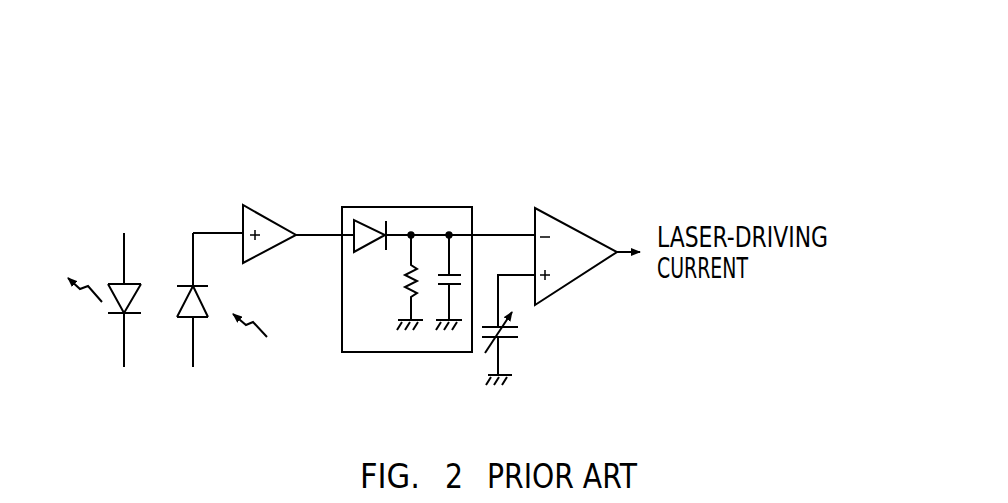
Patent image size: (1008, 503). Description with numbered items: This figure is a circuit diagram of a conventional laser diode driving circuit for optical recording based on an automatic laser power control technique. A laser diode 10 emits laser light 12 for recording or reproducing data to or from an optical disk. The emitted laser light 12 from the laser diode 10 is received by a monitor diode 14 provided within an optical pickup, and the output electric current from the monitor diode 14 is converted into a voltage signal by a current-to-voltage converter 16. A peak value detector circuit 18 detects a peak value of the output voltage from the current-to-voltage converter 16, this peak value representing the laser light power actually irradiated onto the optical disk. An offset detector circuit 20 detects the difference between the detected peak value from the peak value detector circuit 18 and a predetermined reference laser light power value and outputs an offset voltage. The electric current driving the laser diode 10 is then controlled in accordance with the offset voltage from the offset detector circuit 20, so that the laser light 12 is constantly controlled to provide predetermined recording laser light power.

The laser diode 10 is at (112, 317).
The laser light 12 is at (83, 293).
The monitor diode 14 is at (177, 320).
The current-to-voltage converter 16 is at (244, 205).
The peak value detector circuit 18 is at (468, 207).
The offset detector circuit 20 is at (548, 212).